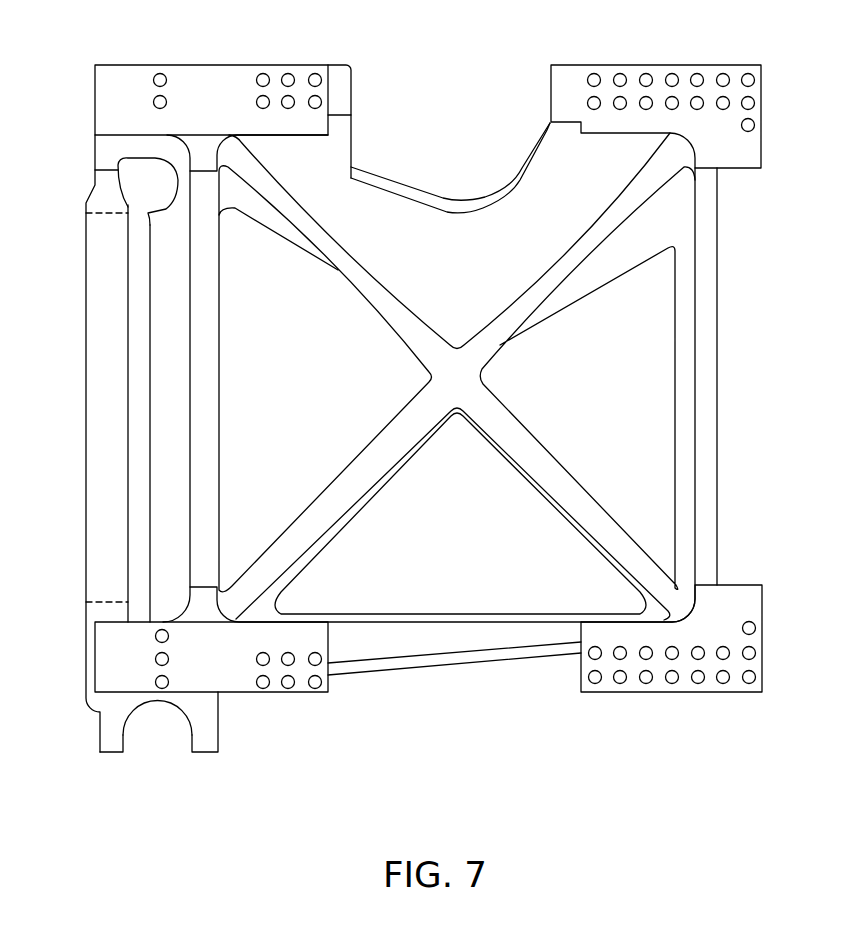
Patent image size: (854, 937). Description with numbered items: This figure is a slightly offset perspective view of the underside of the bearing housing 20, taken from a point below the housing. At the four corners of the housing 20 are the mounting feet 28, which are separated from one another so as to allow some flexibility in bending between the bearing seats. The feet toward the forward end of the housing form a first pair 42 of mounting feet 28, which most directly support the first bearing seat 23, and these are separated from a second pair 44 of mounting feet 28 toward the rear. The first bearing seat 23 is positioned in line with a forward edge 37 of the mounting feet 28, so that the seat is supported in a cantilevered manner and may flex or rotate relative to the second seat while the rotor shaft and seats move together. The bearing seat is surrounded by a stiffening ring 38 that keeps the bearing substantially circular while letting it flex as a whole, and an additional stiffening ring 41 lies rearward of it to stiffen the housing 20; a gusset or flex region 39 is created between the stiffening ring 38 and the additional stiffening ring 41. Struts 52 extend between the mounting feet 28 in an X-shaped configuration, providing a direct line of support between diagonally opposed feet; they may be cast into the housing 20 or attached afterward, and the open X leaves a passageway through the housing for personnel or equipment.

The bearing housing 20 is at (448, 53).
The first bearing seat 23 is at (88, 206).
The mounting feet 28 is at (143, 64).
The forward edge 37 is at (93, 92).
The stiffening ring 38 is at (128, 738).
The gusset or flex region 39 is at (156, 722).
The additional stiffening ring 41 is at (209, 741).
The first pair of mounting feet 42 is at (222, 72).
The second pair of mounting feet 44 is at (737, 70).
The struts 52 is at (582, 281).